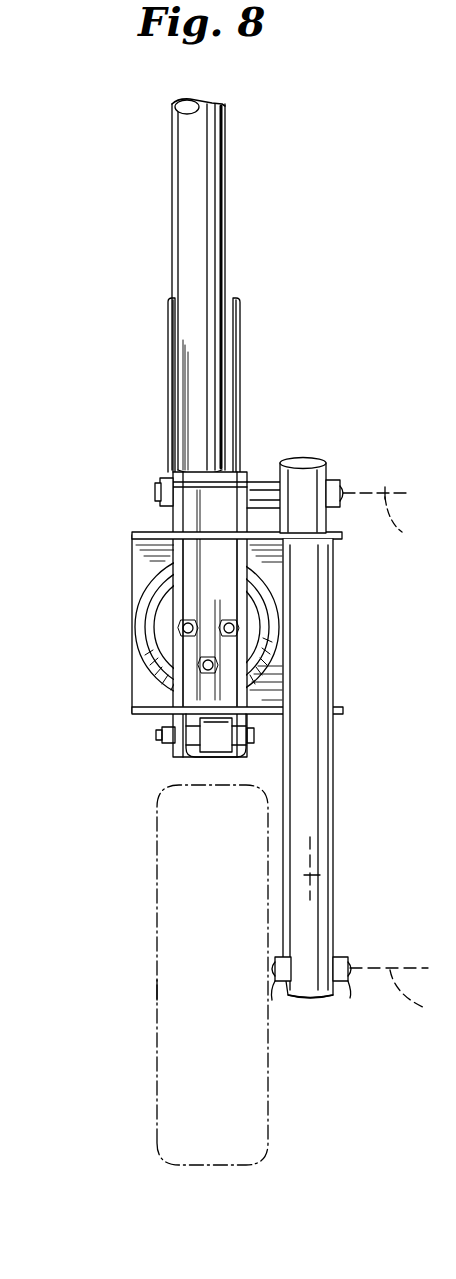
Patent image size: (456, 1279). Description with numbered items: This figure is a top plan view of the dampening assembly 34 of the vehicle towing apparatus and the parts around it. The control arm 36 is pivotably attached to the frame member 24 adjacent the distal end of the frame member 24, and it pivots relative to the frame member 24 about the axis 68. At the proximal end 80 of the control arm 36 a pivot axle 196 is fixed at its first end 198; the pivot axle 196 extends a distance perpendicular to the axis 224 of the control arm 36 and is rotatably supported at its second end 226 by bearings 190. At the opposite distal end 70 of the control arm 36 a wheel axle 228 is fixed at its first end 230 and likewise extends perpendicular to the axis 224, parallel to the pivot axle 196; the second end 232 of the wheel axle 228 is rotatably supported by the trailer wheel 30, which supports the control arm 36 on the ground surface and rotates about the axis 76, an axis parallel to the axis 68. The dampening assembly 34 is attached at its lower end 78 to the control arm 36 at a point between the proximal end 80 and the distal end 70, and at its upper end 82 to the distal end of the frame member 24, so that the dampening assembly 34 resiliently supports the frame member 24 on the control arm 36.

The frame member 24 is at (257, 165).
The trailer wheel 30 is at (175, 840).
The dampening assembly 34 is at (114, 569).
The control arm 36 is at (358, 772).
The axis 68 is at (389, 517).
The distal end of control arm 70 is at (315, 996).
The axis 76 is at (403, 995).
The lower end of dampening assembly 78 is at (140, 697).
The proximal end of control arm 80 is at (305, 470).
The upper end of dampening assembly 82 is at (178, 641).
The bearings 190 is at (168, 475).
The pivot axle 196 is at (258, 488).
The first end of pivot axle 198 is at (340, 486).
The axis of control arm 224 is at (340, 873).
The second end of pivot axle 226 is at (158, 491).
The wheel axle 228 is at (282, 990).
The first end of wheel axle 230 is at (347, 986).
The second end of wheel axle 232 is at (155, 984).